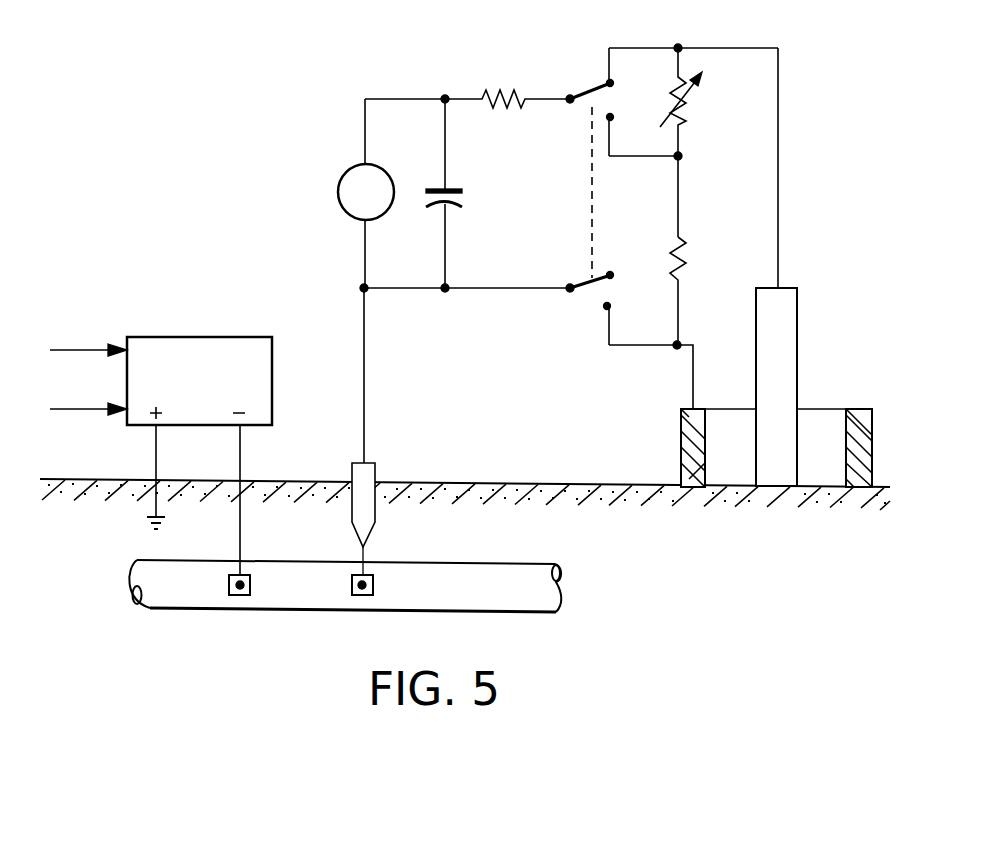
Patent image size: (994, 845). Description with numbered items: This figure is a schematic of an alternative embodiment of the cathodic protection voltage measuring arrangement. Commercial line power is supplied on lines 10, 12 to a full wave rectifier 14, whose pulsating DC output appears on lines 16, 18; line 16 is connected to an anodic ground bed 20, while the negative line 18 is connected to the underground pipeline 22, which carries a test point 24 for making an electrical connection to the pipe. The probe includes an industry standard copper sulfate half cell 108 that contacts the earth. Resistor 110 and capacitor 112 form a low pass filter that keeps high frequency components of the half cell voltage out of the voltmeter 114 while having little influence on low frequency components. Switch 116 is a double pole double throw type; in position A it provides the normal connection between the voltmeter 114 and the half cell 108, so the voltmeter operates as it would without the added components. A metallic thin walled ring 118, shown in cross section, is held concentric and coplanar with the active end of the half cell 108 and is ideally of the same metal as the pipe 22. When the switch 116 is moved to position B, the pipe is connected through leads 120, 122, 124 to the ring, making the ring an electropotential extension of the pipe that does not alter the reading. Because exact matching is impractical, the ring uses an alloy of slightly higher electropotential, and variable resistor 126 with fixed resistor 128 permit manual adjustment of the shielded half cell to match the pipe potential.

The line 10 is at (93, 347).
The line 12 is at (93, 412).
The full wave rectifier 14 is at (250, 337).
The line 16 is at (156, 455).
The negative line 18 is at (240, 452).
The anodic ground bed 20 is at (147, 527).
The underground pipeline 22 is at (135, 610).
The test point 24 is at (375, 472).
The copper sulfate half cell 108 is at (797, 317).
The resistor 110 is at (495, 89).
The capacitor 112 is at (462, 200).
The voltmeter 114 is at (338, 185).
The switch 116 is at (595, 91).
The metallic thin walled ring 118 is at (681, 432).
The lead 120 is at (364, 345).
The lead 122 is at (470, 292).
The lead 124 is at (693, 367).
The variable resistor 126 is at (688, 101).
The fixed resistor 128 is at (683, 247).